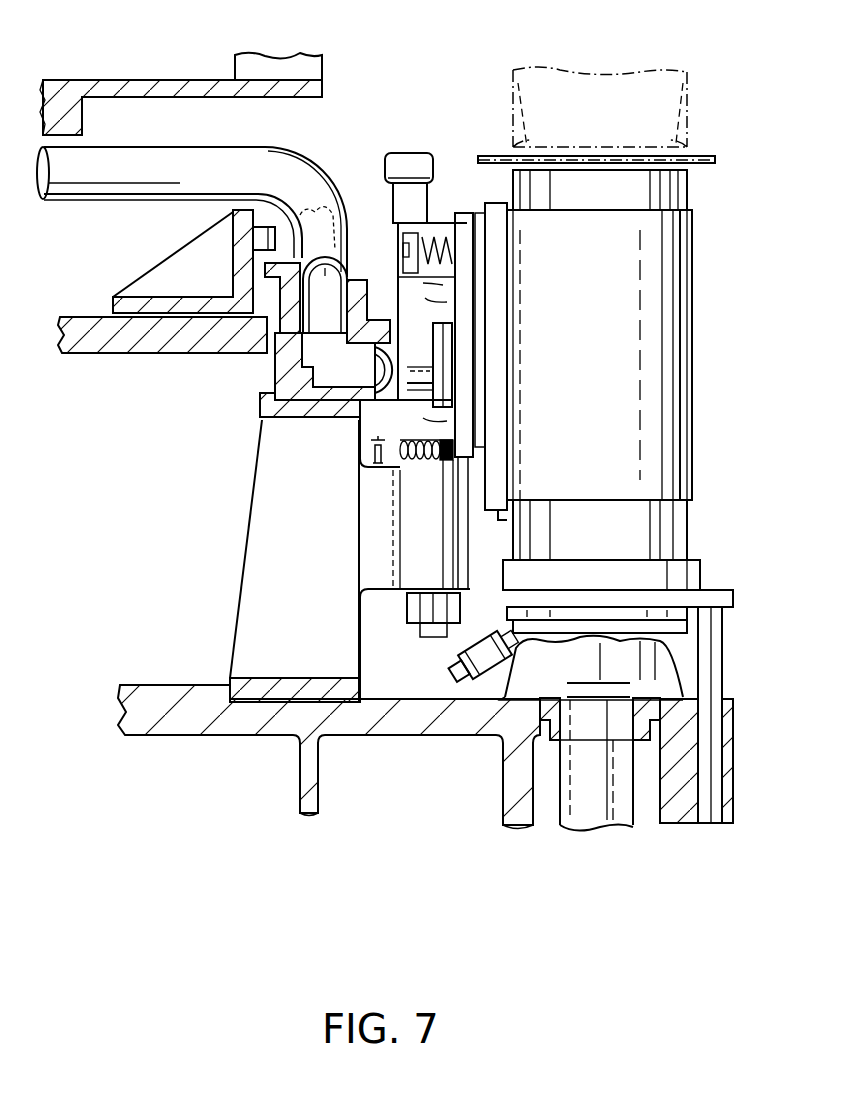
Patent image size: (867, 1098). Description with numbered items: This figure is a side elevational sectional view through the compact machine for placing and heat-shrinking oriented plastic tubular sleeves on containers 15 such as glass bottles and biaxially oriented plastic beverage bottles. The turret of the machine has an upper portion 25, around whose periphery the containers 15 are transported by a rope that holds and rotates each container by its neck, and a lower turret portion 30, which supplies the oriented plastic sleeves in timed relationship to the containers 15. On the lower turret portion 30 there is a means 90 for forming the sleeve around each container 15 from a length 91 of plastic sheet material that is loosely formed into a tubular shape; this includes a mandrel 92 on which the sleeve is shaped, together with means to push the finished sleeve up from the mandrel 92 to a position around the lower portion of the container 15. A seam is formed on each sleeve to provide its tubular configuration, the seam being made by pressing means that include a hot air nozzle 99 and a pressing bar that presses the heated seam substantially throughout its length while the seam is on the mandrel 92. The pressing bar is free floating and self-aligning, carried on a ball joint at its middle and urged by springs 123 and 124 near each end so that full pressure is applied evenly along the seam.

The container 15 is at (683, 100).
The upper portion 25 is at (231, 74).
The lower turret portion 30 is at (240, 472).
The means for forming the sleeve 90 is at (487, 222).
The length of plastic sheet material 91 is at (700, 140).
The mandrel 92 is at (688, 188).
The hot air nozzle 99 is at (503, 197).
The spring 123 is at (397, 237).
The spring 124 is at (421, 447).